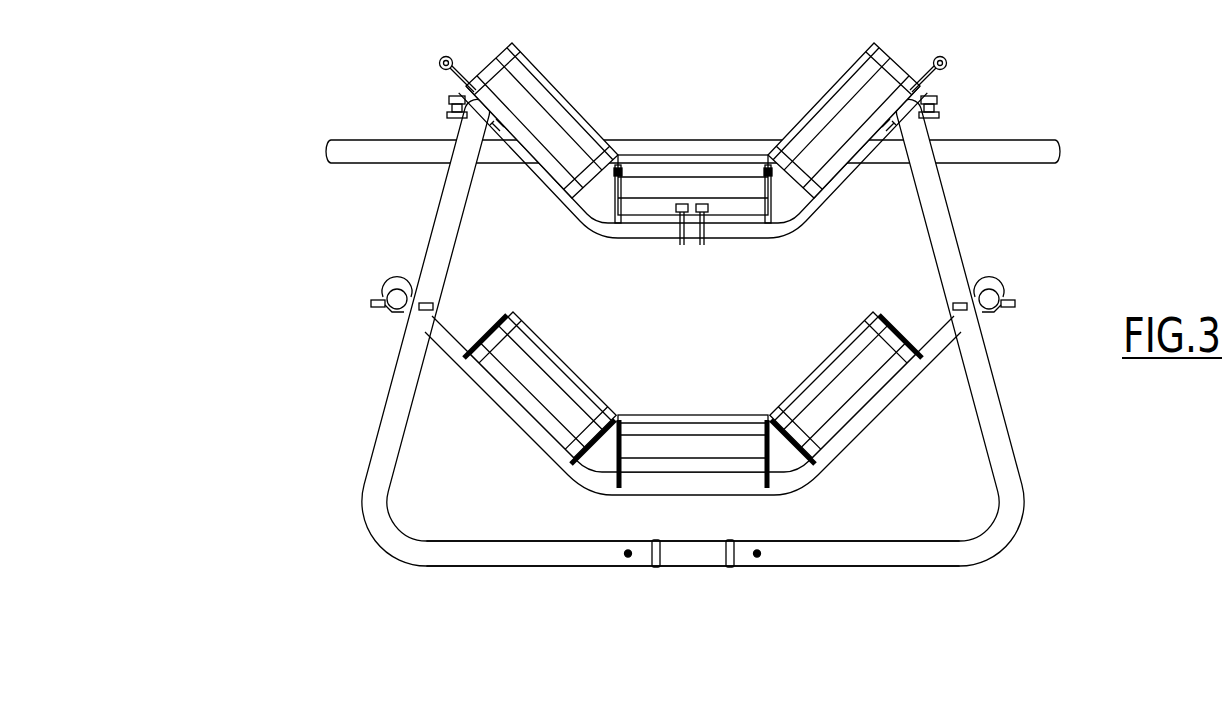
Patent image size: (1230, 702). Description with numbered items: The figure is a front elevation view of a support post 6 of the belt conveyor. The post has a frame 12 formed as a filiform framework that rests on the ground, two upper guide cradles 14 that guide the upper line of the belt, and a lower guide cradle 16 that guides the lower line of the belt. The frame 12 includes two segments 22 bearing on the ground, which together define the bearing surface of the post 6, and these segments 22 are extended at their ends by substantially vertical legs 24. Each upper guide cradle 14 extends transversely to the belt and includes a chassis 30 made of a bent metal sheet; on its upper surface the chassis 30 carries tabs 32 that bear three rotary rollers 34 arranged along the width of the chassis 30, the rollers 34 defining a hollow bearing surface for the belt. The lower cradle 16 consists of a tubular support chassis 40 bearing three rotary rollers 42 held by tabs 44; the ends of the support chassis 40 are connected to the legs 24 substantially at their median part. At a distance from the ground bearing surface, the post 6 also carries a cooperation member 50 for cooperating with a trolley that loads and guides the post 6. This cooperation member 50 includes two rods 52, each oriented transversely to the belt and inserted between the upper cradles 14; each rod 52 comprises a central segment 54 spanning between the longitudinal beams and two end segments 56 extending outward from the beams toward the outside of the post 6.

The support post 6 is at (734, 303).
The frame 12 is at (700, 350).
The upper guide cradle 14 is at (693, 146).
The lower guide cradle 16 is at (693, 403).
The segment 22 is at (827, 553).
The leg 24 is at (397, 408).
The chassis 30 is at (793, 186).
The tab 32 is at (598, 218).
The rotary roller 34 is at (787, 152).
The tubular support chassis 40 is at (853, 423).
The rotary roller 42 is at (797, 398).
The tab 44 is at (491, 337).
The cooperation member 50 is at (681, 123).
The rod 52 is at (533, 183).
The central segment 54 is at (727, 237).
The end segment 56 is at (386, 157).